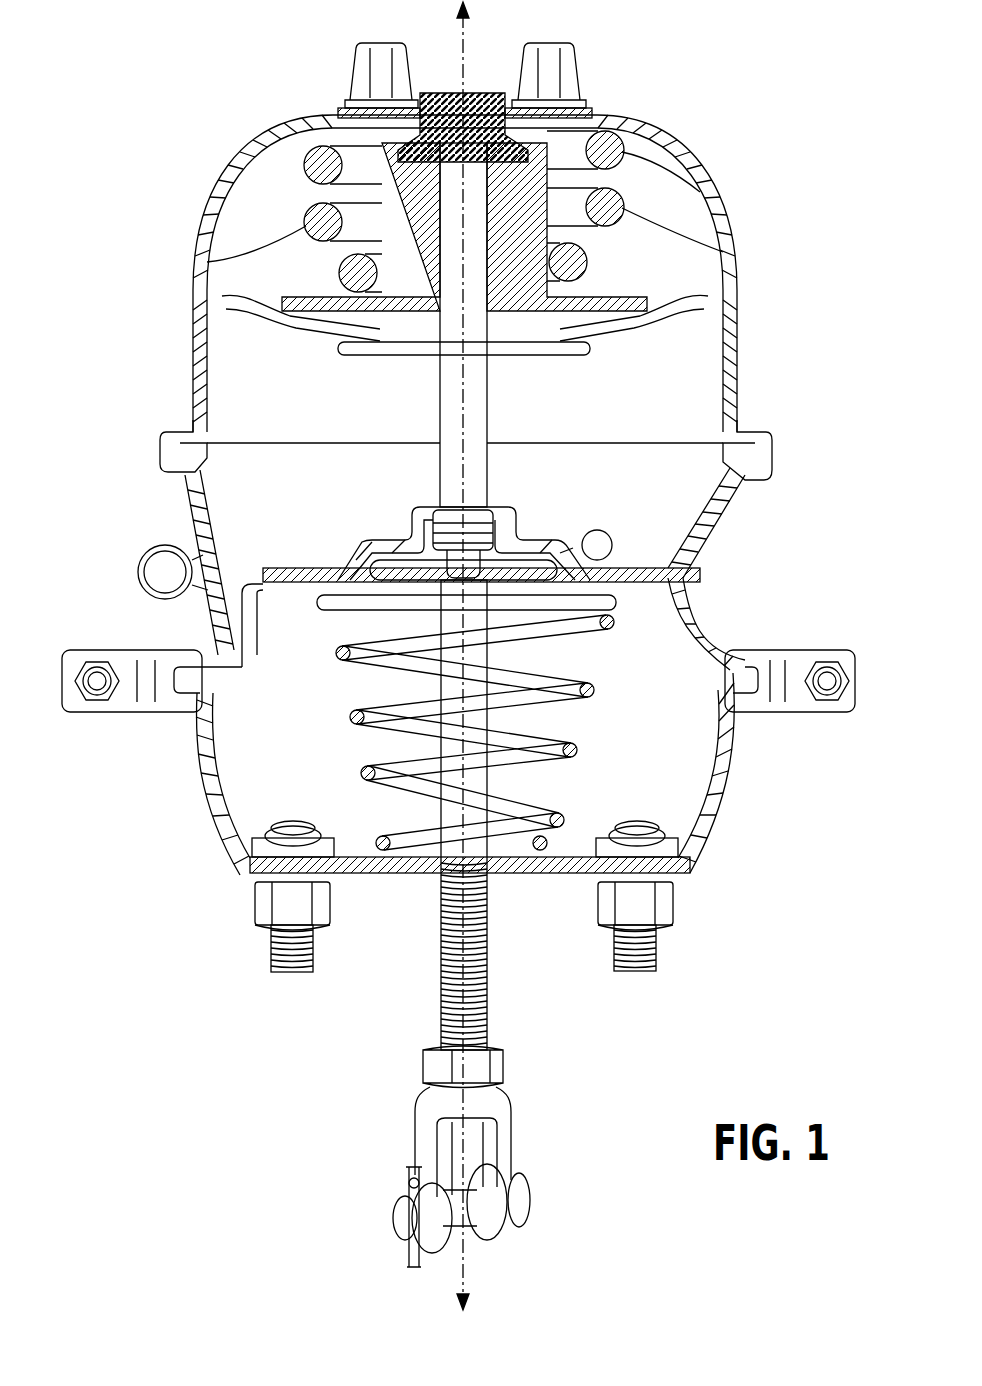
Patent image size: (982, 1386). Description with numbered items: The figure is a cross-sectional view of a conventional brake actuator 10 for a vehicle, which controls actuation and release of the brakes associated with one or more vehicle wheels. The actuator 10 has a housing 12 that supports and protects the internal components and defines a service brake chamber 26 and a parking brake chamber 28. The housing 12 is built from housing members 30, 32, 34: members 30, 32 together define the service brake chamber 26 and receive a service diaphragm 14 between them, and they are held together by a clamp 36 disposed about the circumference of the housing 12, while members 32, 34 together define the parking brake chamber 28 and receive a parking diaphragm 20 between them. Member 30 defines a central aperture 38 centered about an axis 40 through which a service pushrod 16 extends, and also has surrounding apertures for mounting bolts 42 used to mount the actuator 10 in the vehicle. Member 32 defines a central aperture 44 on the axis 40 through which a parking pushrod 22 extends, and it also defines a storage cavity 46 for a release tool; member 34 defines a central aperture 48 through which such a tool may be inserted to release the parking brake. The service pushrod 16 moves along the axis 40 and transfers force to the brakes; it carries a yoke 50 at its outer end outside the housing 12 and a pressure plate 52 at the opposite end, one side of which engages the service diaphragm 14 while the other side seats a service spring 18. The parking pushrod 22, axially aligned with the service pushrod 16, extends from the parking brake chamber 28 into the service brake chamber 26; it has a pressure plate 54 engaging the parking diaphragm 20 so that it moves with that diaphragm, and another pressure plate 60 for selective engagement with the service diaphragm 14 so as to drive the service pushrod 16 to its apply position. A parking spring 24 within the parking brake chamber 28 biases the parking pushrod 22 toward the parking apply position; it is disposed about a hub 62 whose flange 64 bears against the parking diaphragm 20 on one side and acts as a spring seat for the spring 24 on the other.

The brake actuator 10 is at (135, 150).
The housing 12 is at (176, 438).
The service diaphragm 14 is at (238, 665).
The service pushrod 16 is at (480, 978).
The service spring 18 is at (578, 742).
The parking diaphragm 20 is at (238, 307).
The parking pushrod 22 is at (478, 412).
The parking spring 24 is at (660, 212).
The service brake chamber 26 is at (684, 582).
The parking brake chamber 28 is at (668, 500).
The housing member 30 is at (212, 812).
The housing member 32 is at (205, 498).
The housing member 34 is at (193, 297).
The clamp 36 is at (783, 698).
The central aperture 38 is at (441, 870).
The axis 40 is at (468, 1267).
The mounting bolts 42 is at (652, 950).
The central aperture 44 is at (480, 490).
The storage cavity 46 is at (160, 570).
The central aperture 48 is at (505, 188).
The yoke 50 is at (507, 1140).
The pressure plate 52 is at (330, 603).
The pressure plate 54 is at (566, 345).
The pressure plate 60 is at (548, 612).
The hub 62 is at (340, 188).
The flange 64 is at (372, 305).